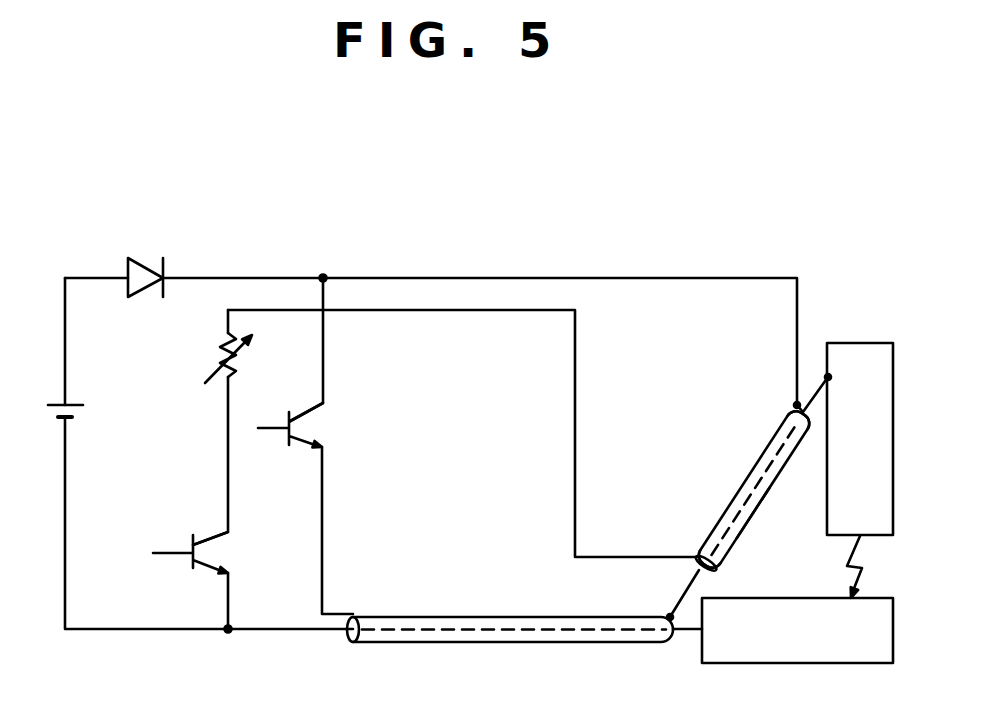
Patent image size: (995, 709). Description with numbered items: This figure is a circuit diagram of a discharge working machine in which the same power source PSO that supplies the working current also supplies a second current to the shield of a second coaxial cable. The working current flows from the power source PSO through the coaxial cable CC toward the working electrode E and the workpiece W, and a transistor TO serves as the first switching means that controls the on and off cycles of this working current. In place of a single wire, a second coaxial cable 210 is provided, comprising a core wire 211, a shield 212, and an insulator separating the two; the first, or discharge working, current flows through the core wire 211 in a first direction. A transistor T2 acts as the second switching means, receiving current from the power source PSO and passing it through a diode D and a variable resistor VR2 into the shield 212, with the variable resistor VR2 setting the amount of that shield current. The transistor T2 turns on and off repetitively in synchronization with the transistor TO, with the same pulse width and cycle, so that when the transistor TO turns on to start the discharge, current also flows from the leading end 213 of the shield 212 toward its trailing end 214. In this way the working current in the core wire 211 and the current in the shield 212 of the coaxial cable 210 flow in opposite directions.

The diode D is at (143, 264).
The power source PSO is at (68, 404).
The variable resistor VR2 is at (240, 358).
The transistor TO is at (318, 430).
The transistor T2 is at (213, 559).
The coaxial cable CC is at (477, 617).
The second coaxial cable 210 is at (753, 463).
The core wire 211 is at (722, 516).
The shield 212 is at (744, 523).
The leading end 213 is at (796, 404).
The trailing end 214 is at (697, 557).
The working electrode E is at (880, 343).
The workpiece W is at (880, 598).